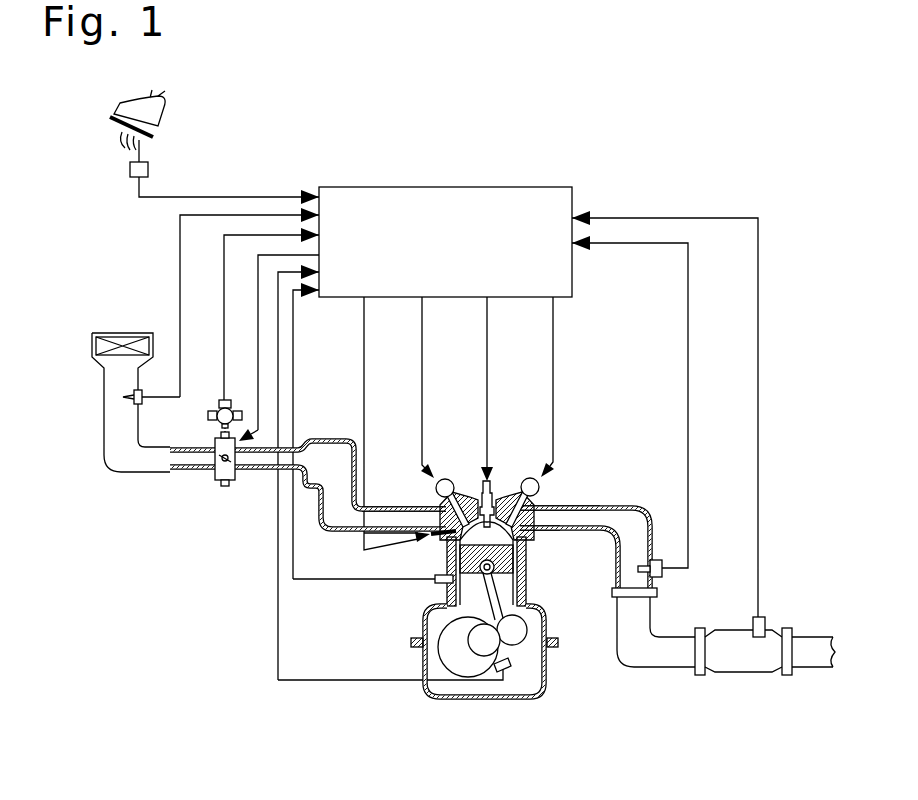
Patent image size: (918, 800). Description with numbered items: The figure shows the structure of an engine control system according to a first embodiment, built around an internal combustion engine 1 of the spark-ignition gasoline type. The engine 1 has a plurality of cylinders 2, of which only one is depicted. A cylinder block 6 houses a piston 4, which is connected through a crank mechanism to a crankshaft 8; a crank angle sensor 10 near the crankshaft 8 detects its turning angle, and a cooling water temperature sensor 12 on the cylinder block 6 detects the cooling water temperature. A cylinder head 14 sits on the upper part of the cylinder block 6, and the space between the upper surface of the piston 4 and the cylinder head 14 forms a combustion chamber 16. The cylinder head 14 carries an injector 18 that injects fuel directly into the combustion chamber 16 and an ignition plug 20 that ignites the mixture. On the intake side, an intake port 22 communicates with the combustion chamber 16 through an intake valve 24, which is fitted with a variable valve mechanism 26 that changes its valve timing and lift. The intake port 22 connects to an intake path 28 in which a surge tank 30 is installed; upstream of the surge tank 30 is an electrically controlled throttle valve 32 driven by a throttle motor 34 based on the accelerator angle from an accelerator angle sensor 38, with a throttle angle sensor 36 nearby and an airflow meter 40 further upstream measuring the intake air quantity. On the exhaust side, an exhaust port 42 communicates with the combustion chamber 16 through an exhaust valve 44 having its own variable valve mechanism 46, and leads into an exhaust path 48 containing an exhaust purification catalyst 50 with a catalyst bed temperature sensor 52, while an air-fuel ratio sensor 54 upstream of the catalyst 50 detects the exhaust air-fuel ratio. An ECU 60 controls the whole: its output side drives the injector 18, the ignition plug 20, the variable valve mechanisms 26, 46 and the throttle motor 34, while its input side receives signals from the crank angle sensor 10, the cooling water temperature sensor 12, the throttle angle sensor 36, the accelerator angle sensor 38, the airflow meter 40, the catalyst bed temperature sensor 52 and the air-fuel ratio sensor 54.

The internal combustion engine 1 is at (529, 702).
The cylinder 2 is at (548, 620).
The piston 4 is at (530, 583).
The cylinder block 6 is at (427, 608).
The crankshaft 8 is at (462, 650).
The crank angle sensor 10 is at (510, 659).
The cooling water temperature sensor 12 is at (420, 585).
The cylinder head 14 is at (521, 476).
The combustion chamber 16 is at (518, 553).
The injector 18 is at (440, 538).
The ignition plug 20 is at (494, 481).
The intake port 22 is at (437, 502).
The intake valve 24 is at (458, 495).
The variable valve mechanism 26 is at (452, 478).
The intake path 28 is at (378, 505).
The surge tank 30 is at (333, 437).
The throttle valve 32 is at (237, 455).
The throttle motor 34 is at (212, 452).
The throttle angle sensor 36 is at (218, 405).
The accelerator angle sensor 38 is at (150, 170).
The airflow meter 40 is at (144, 400).
The exhaust port 42 is at (537, 530).
The exhaust valve 44 is at (540, 508).
The variable valve mechanism 46 is at (553, 480).
The exhaust path 48 is at (633, 505).
The exhaust purification catalyst 50 is at (745, 673).
The catalyst bed temperature sensor 52 is at (767, 618).
The air-fuel ratio sensor 54 is at (662, 572).
The ECU 60 is at (452, 187).